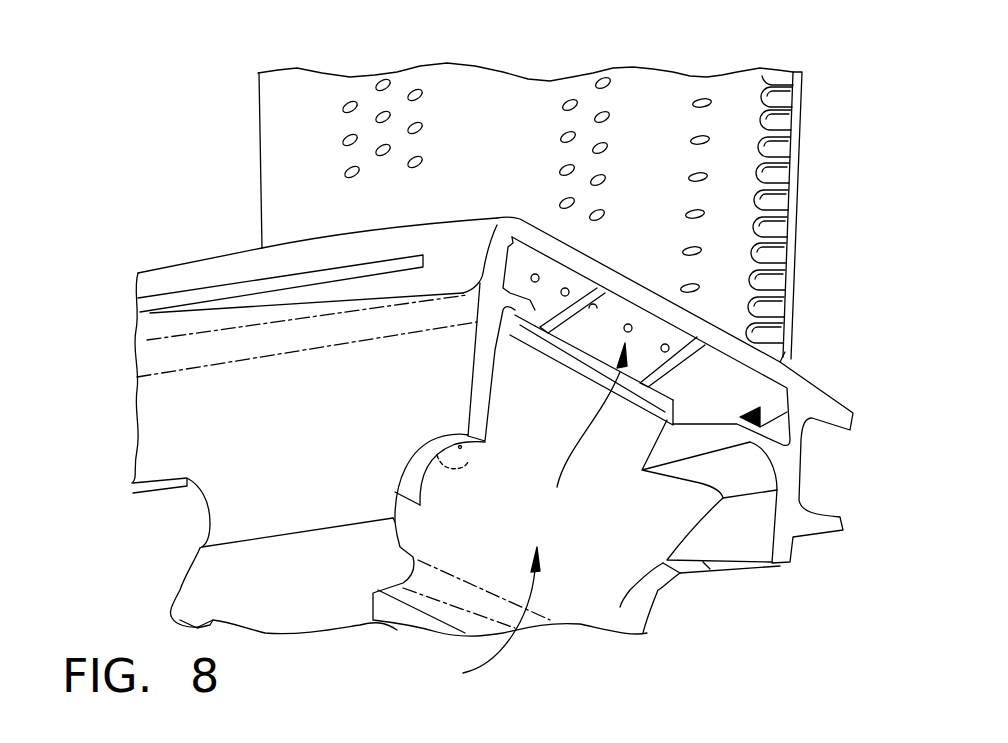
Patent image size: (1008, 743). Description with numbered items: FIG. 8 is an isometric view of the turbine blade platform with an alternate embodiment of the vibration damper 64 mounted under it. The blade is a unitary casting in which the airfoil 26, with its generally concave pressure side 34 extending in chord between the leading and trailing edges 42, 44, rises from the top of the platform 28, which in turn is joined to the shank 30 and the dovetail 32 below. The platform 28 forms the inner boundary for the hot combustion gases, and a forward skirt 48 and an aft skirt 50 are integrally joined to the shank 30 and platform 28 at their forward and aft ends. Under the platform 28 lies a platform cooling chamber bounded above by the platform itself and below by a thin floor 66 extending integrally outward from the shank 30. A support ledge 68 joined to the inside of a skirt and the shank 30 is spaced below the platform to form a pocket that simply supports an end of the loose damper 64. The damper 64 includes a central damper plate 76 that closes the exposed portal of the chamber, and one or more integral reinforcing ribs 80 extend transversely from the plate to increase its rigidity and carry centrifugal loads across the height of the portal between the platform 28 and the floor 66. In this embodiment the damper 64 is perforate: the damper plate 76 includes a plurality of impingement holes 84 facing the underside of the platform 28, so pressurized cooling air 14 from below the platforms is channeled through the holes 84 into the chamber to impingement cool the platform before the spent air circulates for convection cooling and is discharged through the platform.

The pressurized cooling air 14 is at (513, 655).
The airfoil 26 is at (432, 63).
The platform 28 is at (833, 408).
The shank 30 is at (527, 492).
The dovetail 32 is at (297, 592).
The pressure side 34 is at (517, 129).
The leading edge 42 is at (259, 132).
The trailing edge 44 is at (800, 157).
The forward skirt 48 is at (313, 404).
The aft skirt 50 is at (762, 542).
The vibration damper 64 is at (778, 360).
The floor 66 is at (563, 370).
The support ledge 68 is at (693, 440).
The damper plate 76 is at (730, 397).
The reinforcing rib 80 is at (673, 408).
The impingement hole 84 is at (634, 326).